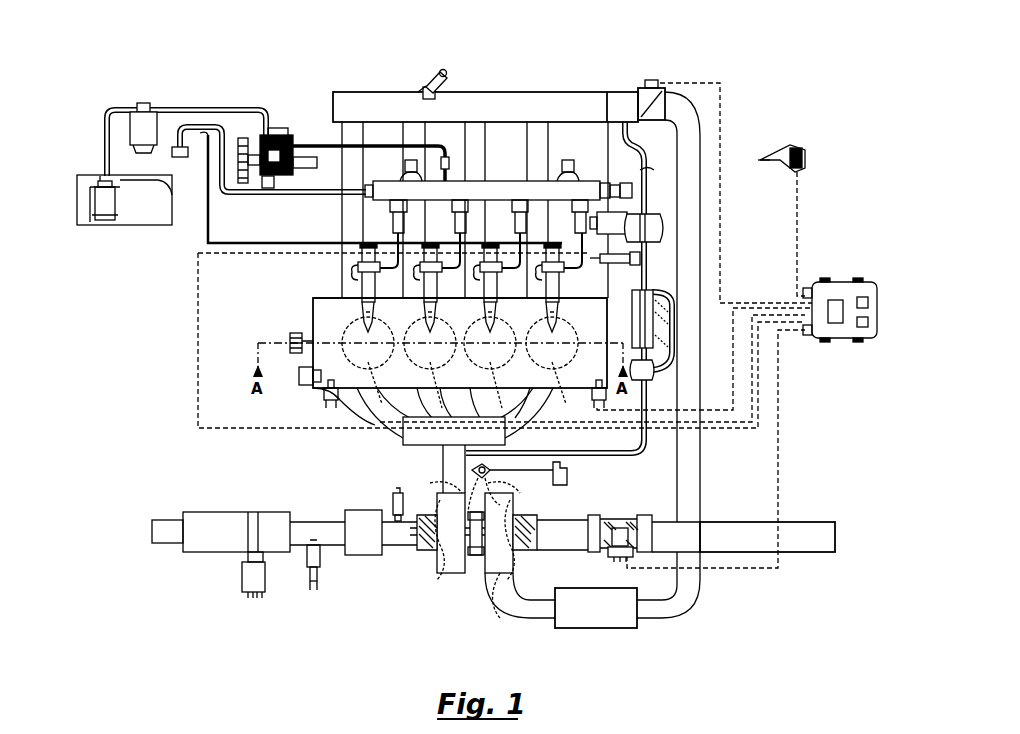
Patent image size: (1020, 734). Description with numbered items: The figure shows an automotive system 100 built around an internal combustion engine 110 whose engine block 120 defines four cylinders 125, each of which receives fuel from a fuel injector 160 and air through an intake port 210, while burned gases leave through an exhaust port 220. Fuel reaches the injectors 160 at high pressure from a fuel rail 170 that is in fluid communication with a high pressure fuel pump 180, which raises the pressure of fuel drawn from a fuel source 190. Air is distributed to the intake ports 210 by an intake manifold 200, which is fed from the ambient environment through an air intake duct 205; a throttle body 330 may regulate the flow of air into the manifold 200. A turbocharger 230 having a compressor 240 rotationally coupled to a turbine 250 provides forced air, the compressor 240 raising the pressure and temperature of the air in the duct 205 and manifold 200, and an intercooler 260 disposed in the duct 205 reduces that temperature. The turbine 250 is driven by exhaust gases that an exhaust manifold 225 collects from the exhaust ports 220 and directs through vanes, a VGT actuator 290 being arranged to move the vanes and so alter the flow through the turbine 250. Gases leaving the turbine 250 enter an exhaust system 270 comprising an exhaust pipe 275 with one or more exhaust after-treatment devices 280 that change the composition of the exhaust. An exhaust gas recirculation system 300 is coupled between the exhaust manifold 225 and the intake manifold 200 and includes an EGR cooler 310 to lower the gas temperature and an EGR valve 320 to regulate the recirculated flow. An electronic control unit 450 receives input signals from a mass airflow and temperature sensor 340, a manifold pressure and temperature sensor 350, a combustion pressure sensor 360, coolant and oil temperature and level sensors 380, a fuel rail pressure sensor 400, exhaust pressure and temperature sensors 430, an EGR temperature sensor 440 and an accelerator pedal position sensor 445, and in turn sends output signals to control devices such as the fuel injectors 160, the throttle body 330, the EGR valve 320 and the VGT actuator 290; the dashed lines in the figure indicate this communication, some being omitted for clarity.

The automotive system 100 is at (247, 70).
The internal combustion engine 110 is at (566, 74).
The engine block 120 is at (312, 307).
The cylinder 125 is at (572, 323).
The fuel injector 160 is at (356, 279).
The fuel rail 170 is at (365, 197).
The high pressure fuel pump 180 is at (289, 124).
The fuel source 190 is at (146, 212).
The intake manifold 200 is at (478, 108).
The air intake duct 205 is at (806, 538).
The intake port 210 is at (345, 285).
The exhaust port 220 is at (352, 402).
The exhaust manifold 225 is at (392, 506).
The turbocharger 230 is at (471, 563).
The compressor 240 is at (503, 560).
The turbine 250 is at (447, 558).
The intercooler 260 is at (620, 617).
The exhaust system 270 is at (254, 548).
The exhaust pipe 275 is at (165, 531).
The exhaust after-treatment device 280 is at (208, 534).
The VGT actuator 290 is at (523, 483).
The exhaust gas recirculation system 300 is at (614, 468).
The EGR cooler 310 is at (643, 332).
The EGR valve 320 is at (628, 215).
The throttle body 330 is at (652, 80).
The mass airflow and temperature sensor 340 is at (607, 557).
The manifold pressure and temperature sensor 350 is at (423, 83).
The combustion pressure sensor 360 is at (428, 440).
The coolant and oil temperature and level sensors 380 is at (322, 393).
The fuel rail pressure sensor 400 is at (628, 162).
The exhaust pressure and temperature sensors 430 is at (264, 598).
The EGR temperature sensor 440 is at (655, 247).
The accelerator pedal position sensor 445 is at (800, 147).
The electronic control unit 450 is at (843, 282).